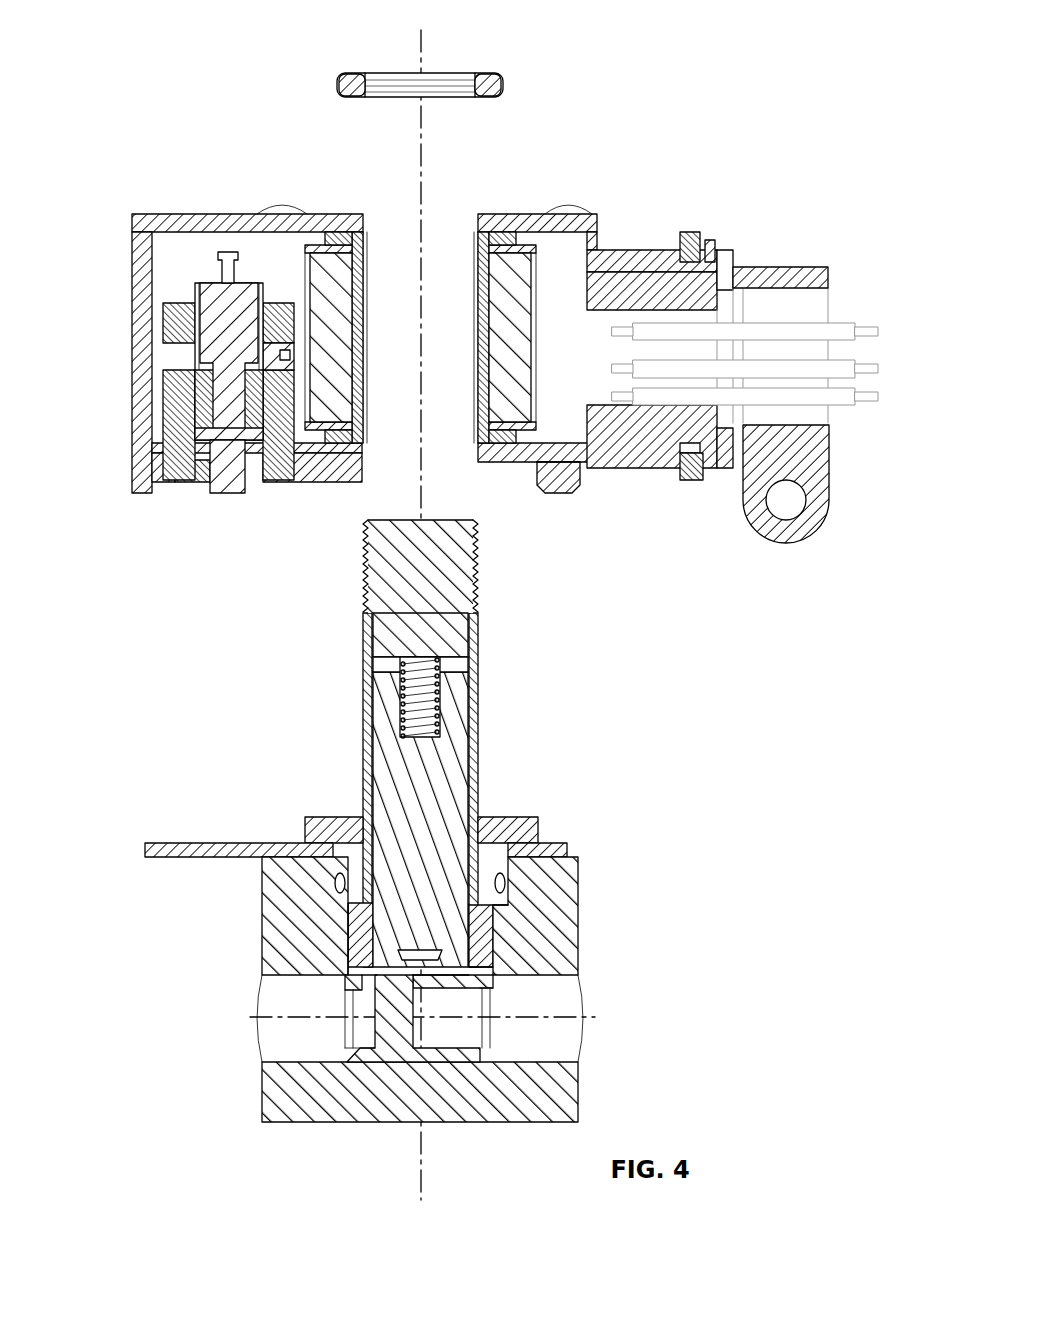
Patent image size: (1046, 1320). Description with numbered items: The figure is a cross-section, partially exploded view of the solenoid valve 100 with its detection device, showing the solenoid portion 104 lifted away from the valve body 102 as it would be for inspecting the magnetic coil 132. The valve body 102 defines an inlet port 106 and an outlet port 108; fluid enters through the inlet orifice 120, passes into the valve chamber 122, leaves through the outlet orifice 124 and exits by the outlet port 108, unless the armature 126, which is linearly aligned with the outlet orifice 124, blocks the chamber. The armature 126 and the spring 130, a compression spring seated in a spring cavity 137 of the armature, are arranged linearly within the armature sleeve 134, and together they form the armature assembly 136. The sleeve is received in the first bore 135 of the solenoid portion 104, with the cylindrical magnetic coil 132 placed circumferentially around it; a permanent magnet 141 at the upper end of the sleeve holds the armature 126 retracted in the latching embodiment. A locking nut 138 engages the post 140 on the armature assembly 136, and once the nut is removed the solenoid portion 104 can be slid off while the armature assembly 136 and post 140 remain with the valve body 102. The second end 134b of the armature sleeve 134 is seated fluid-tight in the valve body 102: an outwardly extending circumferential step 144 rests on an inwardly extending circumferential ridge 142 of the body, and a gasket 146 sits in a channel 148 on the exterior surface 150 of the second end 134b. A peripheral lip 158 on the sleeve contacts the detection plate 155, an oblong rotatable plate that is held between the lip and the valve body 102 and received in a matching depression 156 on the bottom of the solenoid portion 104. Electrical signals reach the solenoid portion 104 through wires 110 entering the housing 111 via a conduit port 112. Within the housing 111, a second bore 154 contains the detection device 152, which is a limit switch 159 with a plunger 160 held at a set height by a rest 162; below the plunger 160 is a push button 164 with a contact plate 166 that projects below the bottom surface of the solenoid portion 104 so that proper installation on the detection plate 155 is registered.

The solenoid valve 100 is at (467, 592).
The valve body 102 is at (460, 989).
The solenoid portion 104 is at (467, 301).
The inlet port 106 is at (270, 1025).
The outlet port 108 is at (565, 1025).
The wires 110 is at (732, 376).
The housing 111 is at (175, 332).
The conduit port 112 is at (790, 267).
The inlet orifice 120 is at (370, 962).
The valve chamber 122 is at (485, 960).
The outlet orifice 124 is at (470, 992).
The armature 126 is at (396, 819).
The spring 130 is at (420, 672).
The magnetic coil 132 is at (330, 292).
The armature sleeve 134 is at (368, 762).
The second end of the armature sleeve 134b is at (480, 942).
The first bore 135 is at (393, 215).
The armature assembly 136 is at (372, 846).
The spring cavity 137 is at (420, 662).
The locking nut 138 is at (345, 73).
The post 140 is at (385, 547).
The permanent magnet 141 is at (470, 645).
The circumferential ridge 142 is at (290, 902).
The circumferential step 144 is at (320, 942).
The gasket 146 is at (503, 862).
The channel 148 is at (505, 882).
The exterior surface 150 is at (520, 846).
The detection device 152 is at (183, 278).
The second bore 154 is at (163, 318).
The detection plate 155 is at (150, 850).
The depression 156 is at (555, 493).
The peripheral lip 158 is at (535, 827).
The limit switch 159 is at (193, 288).
The plunger 160 is at (163, 392).
The rest 162 is at (198, 368).
The push button 164 is at (222, 463).
The contact plate 166 is at (180, 427).